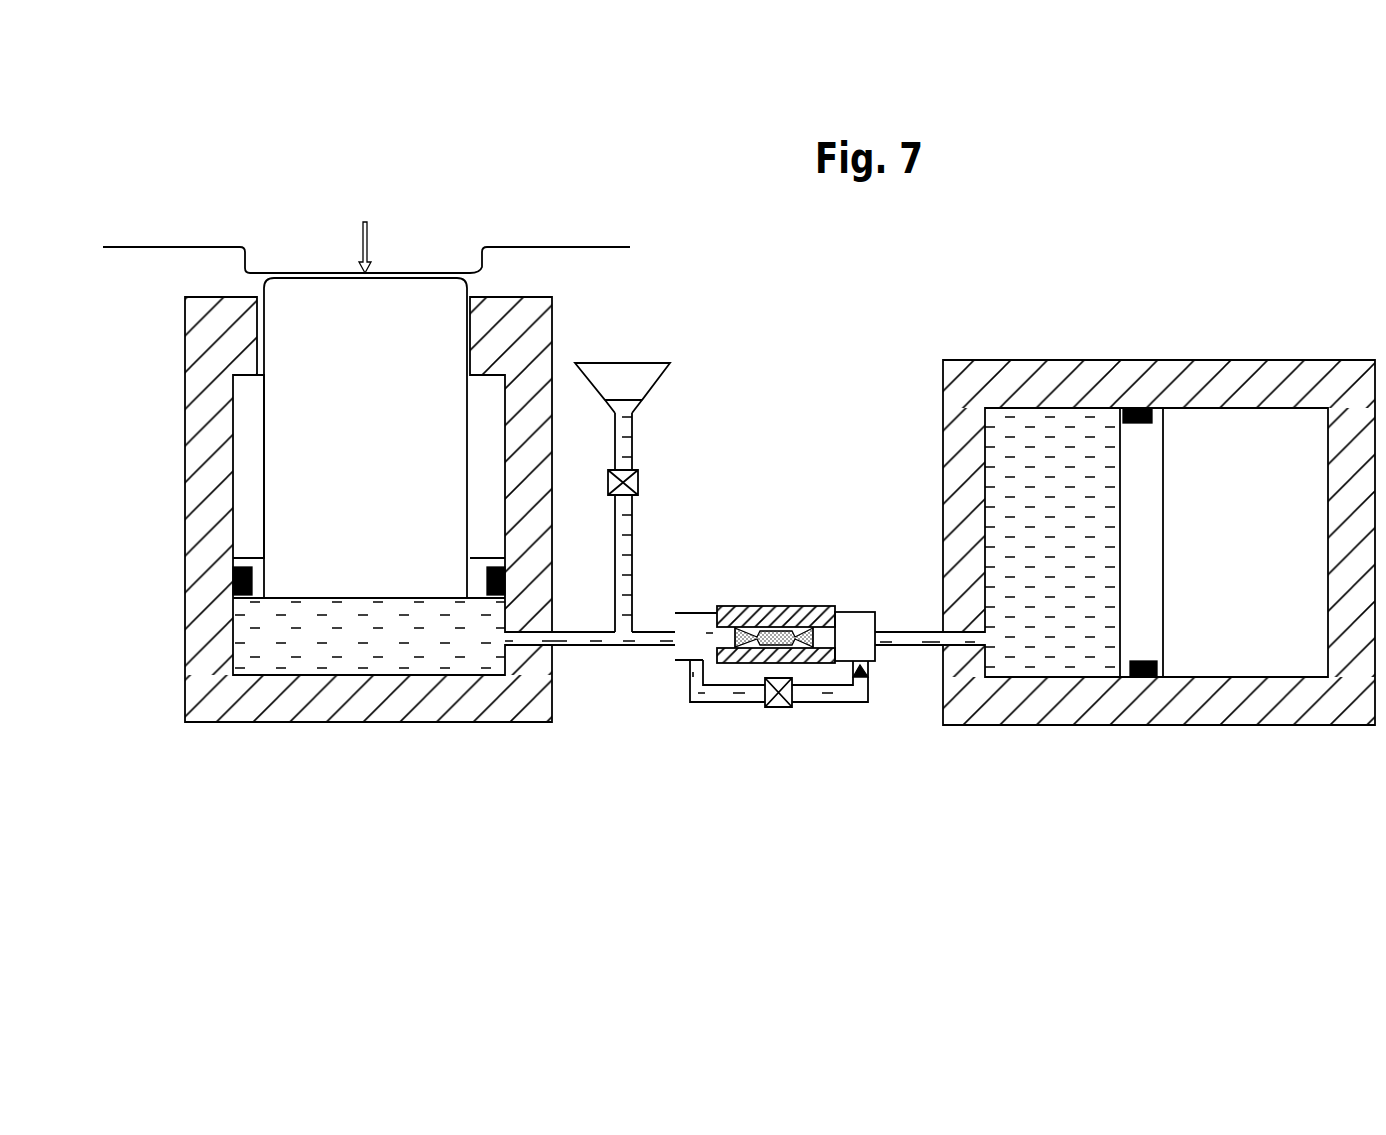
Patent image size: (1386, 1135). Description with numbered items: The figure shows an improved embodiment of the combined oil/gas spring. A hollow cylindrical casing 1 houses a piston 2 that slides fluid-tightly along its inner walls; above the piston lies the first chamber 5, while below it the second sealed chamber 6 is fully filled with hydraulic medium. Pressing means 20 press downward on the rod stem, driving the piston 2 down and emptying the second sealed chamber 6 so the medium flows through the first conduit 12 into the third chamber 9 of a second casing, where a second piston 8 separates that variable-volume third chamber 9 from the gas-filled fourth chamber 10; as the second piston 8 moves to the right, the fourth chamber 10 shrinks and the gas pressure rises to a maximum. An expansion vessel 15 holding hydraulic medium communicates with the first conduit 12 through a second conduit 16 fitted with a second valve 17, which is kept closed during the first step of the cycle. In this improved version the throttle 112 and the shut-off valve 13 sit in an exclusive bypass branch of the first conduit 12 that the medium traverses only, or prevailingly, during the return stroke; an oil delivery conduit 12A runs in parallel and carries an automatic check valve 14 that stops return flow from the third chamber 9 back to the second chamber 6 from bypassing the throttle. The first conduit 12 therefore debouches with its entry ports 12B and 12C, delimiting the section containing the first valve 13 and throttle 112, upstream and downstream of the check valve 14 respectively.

The hollow cylindrical casing 1 is at (187, 471).
The piston 2 is at (382, 582).
The first chamber 5 is at (241, 410).
The second sealed chamber 6 is at (338, 640).
The second piston 8 is at (1141, 437).
The third chamber 9 is at (1088, 435).
The fourth chamber 10 is at (1215, 435).
The first conduit 12 is at (730, 698).
The oil delivery conduit 12A is at (625, 647).
The entry port 12B is at (696, 658).
The entry port 12C is at (863, 646).
The valve 13 is at (783, 707).
The automatic check valve 14 is at (770, 625).
The expansion vessel 15 is at (622, 368).
The second conduit 16 is at (615, 534).
The second valve 17 is at (637, 484).
The pressing means 20 is at (523, 247).
The throttle 112 is at (845, 693).